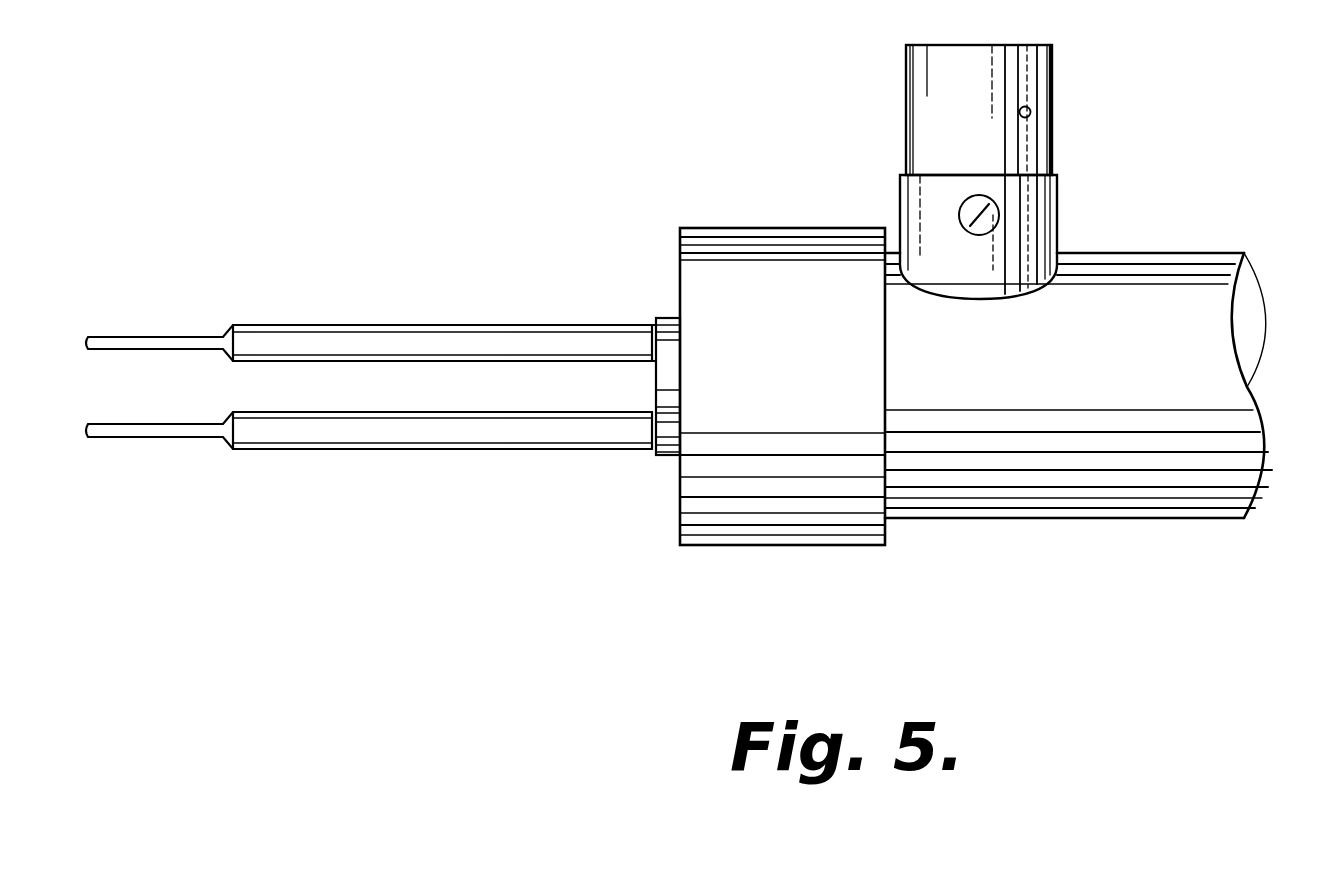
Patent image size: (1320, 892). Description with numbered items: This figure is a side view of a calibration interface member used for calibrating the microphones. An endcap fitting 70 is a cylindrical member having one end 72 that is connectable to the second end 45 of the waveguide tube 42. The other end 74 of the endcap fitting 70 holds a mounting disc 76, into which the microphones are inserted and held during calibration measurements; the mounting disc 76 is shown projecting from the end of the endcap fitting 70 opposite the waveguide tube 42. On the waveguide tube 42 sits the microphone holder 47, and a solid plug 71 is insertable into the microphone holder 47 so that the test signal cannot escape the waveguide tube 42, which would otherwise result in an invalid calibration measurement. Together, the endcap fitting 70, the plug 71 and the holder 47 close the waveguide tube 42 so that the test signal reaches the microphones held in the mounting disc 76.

The endcap fitting 70 is at (723, 210).
The solid plug 71 is at (1053, 78).
The microphone holder 47 is at (1055, 215).
The waveguide tube 42 is at (1193, 253).
The mounting disc 76 is at (664, 318).
The other end of the endcap 74 is at (680, 505).
The one end of the endcap fitting 72 is at (887, 530).
The second end of the waveguide tube 45 is at (962, 520).